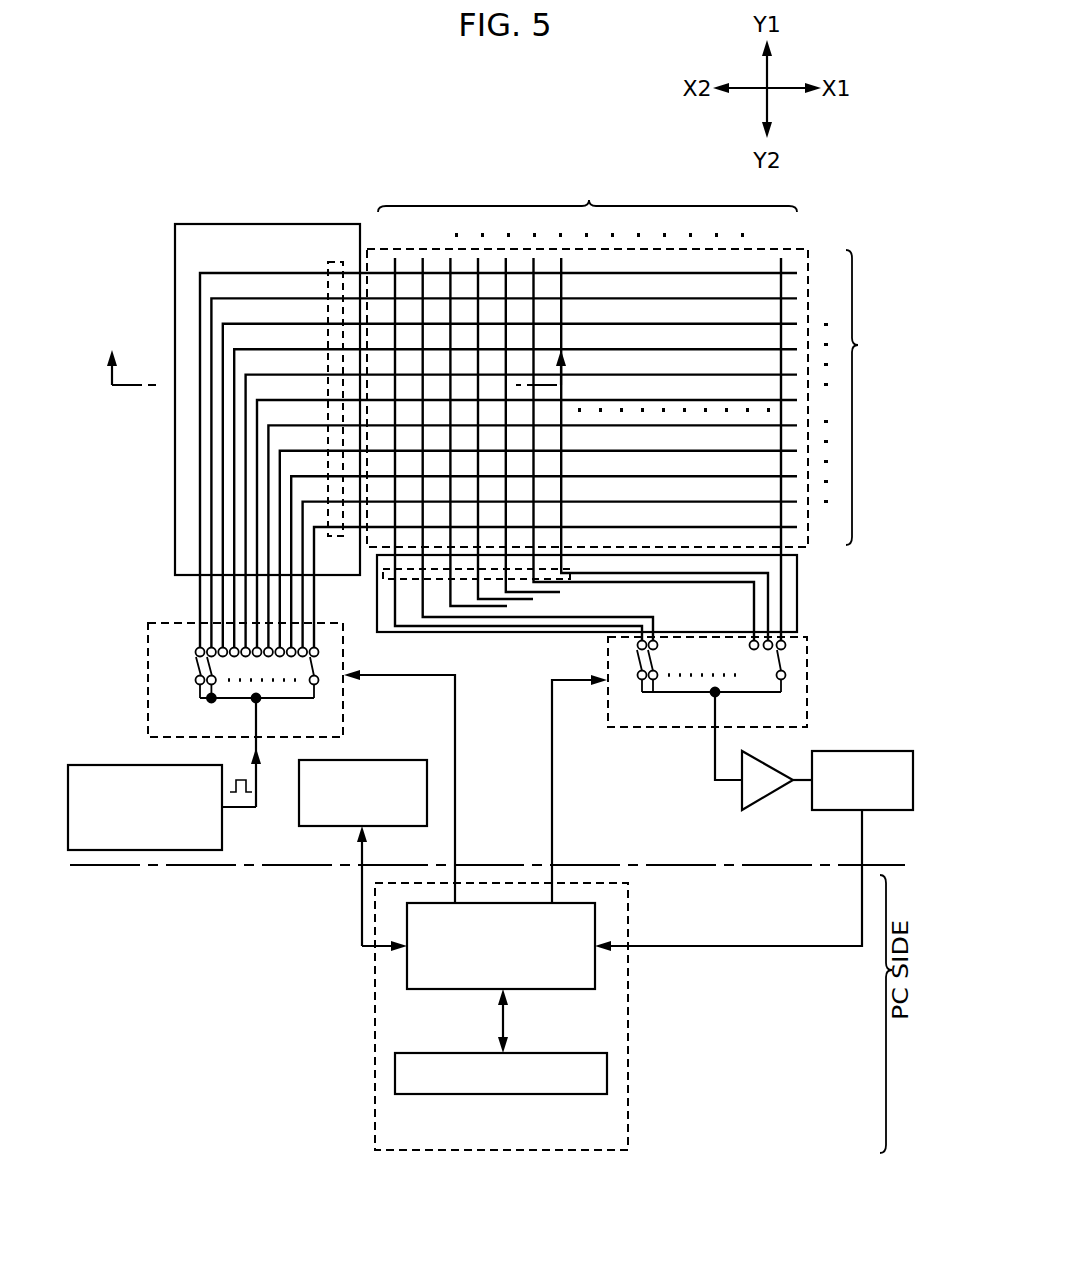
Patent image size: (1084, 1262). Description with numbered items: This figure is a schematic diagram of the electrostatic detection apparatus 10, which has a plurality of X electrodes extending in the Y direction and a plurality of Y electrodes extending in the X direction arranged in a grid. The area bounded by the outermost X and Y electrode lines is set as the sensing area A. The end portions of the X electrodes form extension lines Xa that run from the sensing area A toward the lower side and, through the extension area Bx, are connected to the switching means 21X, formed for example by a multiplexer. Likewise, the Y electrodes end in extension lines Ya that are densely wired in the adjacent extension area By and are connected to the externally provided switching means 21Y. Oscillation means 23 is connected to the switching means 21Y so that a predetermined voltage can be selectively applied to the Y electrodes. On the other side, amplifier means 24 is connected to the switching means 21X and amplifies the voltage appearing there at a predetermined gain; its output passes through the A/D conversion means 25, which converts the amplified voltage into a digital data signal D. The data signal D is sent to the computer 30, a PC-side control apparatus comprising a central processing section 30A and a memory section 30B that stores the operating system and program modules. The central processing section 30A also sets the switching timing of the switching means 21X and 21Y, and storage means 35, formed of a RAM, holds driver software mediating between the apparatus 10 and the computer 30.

The electrostatic detection apparatus 10 is at (203, 118).
The switching means 21Y is at (346, 650).
The switching means 21X is at (809, 650).
The oscillation means 23 is at (100, 765).
The amplifier means 24 is at (775, 793).
The A/D conversion means 25 is at (885, 751).
The computer 30 is at (628, 1093).
The central processing section 30A is at (525, 990).
The memory section 30B is at (525, 1096).
The storage means 35 is at (400, 760).
The sensing area A is at (812, 245).
The extension area By is at (205, 224).
The extension area Bx is at (800, 566).
The extension line Ya is at (340, 262).
The extension line Xa is at (383, 574).
The data signal D is at (748, 948).